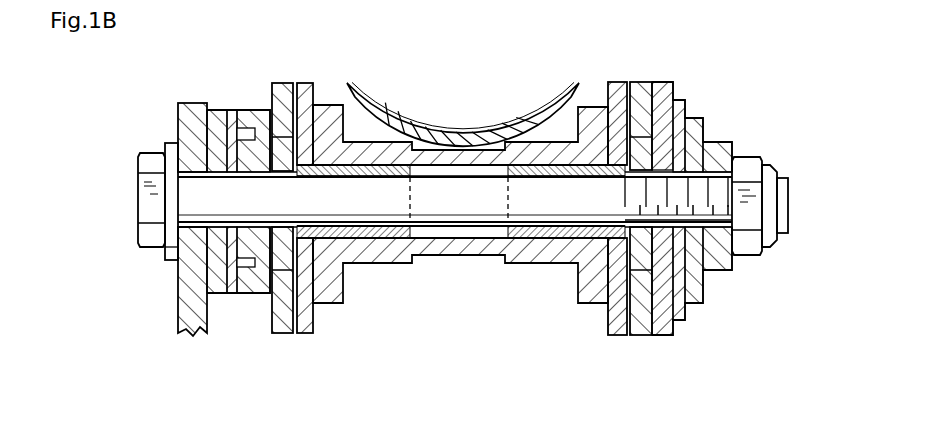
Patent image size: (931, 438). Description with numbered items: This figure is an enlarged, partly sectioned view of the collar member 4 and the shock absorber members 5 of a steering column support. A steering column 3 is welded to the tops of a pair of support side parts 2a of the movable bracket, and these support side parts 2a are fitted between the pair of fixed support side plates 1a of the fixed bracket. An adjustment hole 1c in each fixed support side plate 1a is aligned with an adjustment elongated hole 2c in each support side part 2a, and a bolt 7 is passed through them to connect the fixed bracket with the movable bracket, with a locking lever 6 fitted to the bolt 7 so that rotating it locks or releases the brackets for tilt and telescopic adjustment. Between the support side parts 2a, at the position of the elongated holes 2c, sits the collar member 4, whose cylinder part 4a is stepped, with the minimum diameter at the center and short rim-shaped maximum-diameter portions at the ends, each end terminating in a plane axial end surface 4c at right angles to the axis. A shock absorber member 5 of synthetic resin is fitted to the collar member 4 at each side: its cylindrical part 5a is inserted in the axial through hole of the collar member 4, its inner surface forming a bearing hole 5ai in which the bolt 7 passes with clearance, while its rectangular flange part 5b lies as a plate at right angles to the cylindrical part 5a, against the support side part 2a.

The fixed support side plate 1a is at (282, 147).
The adjustment hole 1c is at (268, 97).
The support side part 2a is at (315, 97).
The adjustment elongated hole 2c is at (298, 238).
The steering column 3 is at (387, 100).
The collar member 4 is at (393, 267).
The cylinder part 4a is at (428, 256).
The axial end surface 4c is at (616, 290).
The shock absorber member 5 is at (357, 243).
The cylindrical part 5a is at (522, 240).
The bearing hole 5ai is at (372, 176).
The flange part 5b is at (295, 240).
The locking lever 6 is at (178, 320).
The bolt 7 is at (466, 220).